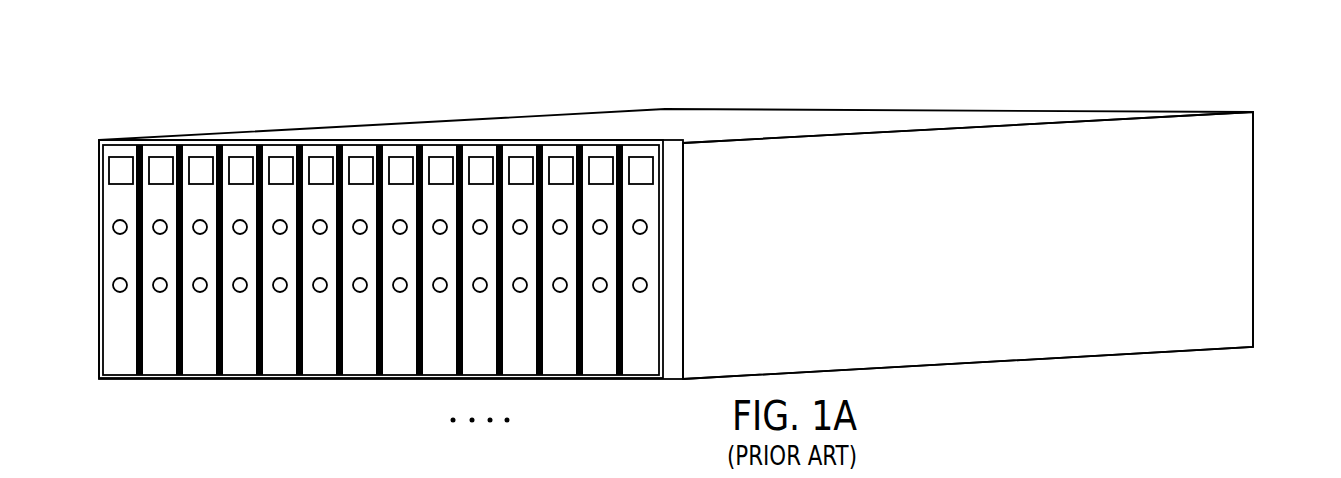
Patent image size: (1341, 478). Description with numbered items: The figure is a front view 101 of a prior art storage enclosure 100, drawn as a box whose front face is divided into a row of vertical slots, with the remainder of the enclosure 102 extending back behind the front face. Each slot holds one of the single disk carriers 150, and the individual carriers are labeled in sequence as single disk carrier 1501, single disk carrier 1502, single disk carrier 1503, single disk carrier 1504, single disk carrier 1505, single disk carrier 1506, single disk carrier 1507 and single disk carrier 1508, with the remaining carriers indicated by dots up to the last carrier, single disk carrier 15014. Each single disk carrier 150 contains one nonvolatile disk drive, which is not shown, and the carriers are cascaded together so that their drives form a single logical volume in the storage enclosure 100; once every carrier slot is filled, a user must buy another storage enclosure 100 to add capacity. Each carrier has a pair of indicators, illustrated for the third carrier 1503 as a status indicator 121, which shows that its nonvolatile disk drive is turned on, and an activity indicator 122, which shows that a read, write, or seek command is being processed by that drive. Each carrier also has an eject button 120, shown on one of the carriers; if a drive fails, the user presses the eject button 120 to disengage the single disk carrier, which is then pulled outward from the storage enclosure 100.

The storage enclosure 100 is at (1240, 381).
The front view 101 is at (686, 78).
The rear chassis section 102 is at (1255, 102).
The eject button 120 is at (473, 158).
The status indicator 121 is at (201, 220).
The activity indicator 122 is at (201, 292).
The single disk carriers 150 is at (383, 277).
The single disk carrier 1501 is at (107, 370).
The single disk carrier 1502 is at (157, 367).
The single disk carrier 1503 is at (230, 265).
The single disk carrier 1504 is at (243, 370).
The single disk carrier 1505 is at (285, 370).
The single disk carrier 1506 is at (320, 370).
The single disk carrier 1507 is at (360, 370).
The single disk carrier 1508 is at (397, 370).
The single disk carrier 15014 is at (632, 368).